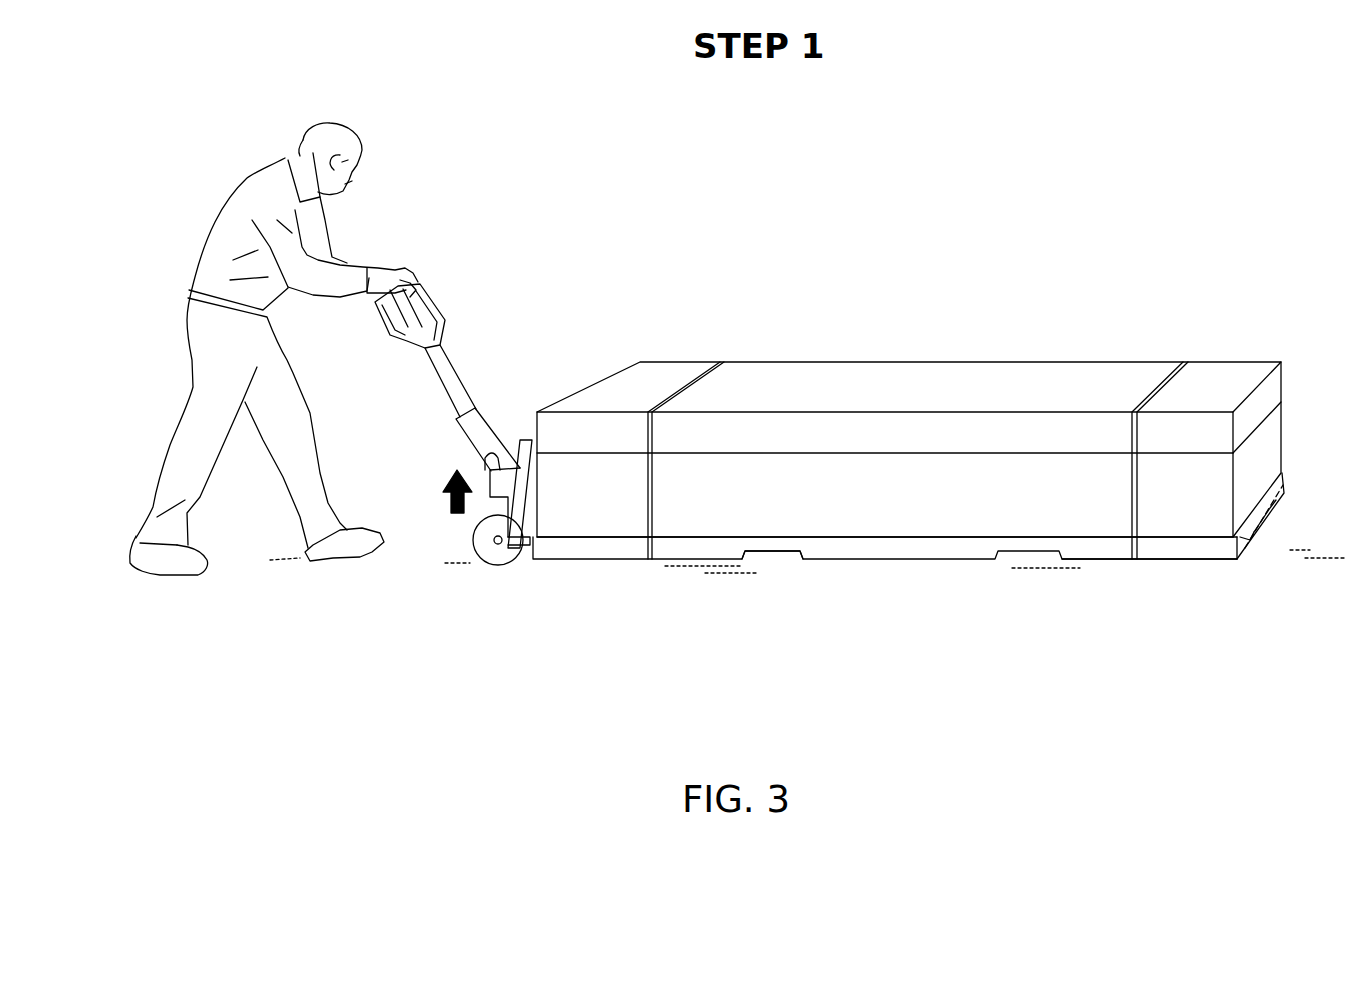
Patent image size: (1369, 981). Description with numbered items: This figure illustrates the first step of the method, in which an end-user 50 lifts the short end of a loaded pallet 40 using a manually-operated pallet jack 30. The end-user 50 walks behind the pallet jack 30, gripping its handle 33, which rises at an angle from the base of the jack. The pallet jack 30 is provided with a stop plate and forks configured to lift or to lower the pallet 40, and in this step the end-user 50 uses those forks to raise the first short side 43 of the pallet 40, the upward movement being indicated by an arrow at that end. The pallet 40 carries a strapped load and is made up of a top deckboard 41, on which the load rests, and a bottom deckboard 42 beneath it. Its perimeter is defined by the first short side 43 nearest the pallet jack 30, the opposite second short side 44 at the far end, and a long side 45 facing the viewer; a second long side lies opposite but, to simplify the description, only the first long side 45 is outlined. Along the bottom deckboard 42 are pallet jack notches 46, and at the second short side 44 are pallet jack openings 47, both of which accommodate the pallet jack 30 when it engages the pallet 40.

The end-user 50 is at (253, 178).
The pallet jack 30 is at (459, 446).
The handle 33 is at (438, 368).
The first short side 43 is at (522, 562).
The pallet 40 is at (931, 499).
The top deckboard 41 is at (1102, 537).
The bottom deckboard 42 is at (1108, 559).
The second short side 44 is at (1247, 545).
The long side 45 is at (903, 550).
The pallet jack notches 46 is at (778, 557).
The pallet jack openings 47 is at (1272, 502).